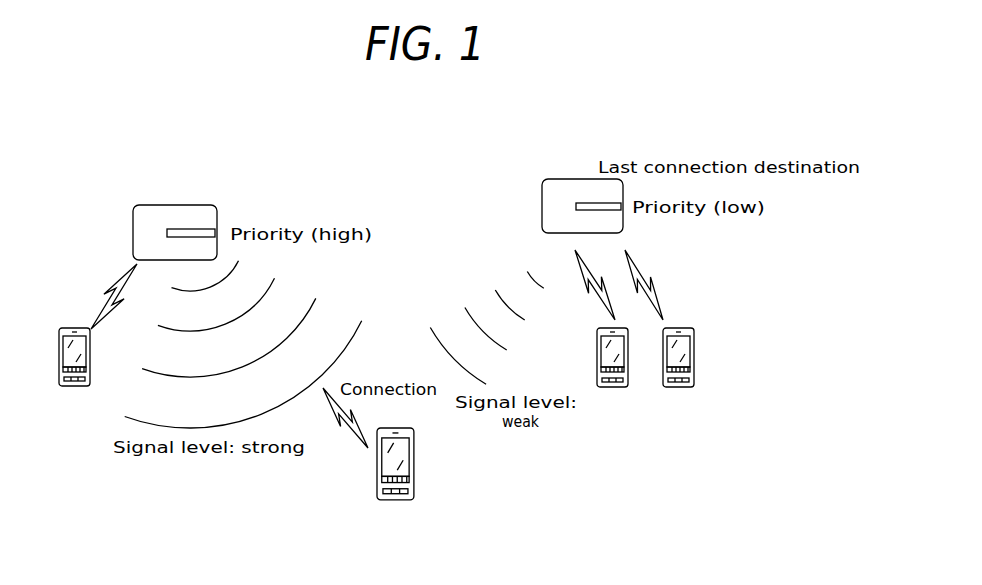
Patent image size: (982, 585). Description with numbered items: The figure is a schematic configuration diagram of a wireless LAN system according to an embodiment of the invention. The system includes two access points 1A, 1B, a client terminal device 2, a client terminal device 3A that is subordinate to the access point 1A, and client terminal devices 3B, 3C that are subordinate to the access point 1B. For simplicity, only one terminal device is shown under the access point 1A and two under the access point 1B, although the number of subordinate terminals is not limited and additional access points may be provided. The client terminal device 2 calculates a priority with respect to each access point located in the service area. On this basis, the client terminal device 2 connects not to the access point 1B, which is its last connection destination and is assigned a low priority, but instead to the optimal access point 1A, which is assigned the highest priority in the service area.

The access point 1A is at (172, 205).
The access point 1B is at (580, 179).
The client terminal device 2 is at (395, 501).
The client terminal device 3A is at (75, 387).
The client terminal device 3B is at (612, 388).
The client terminal device 3C is at (678, 388).